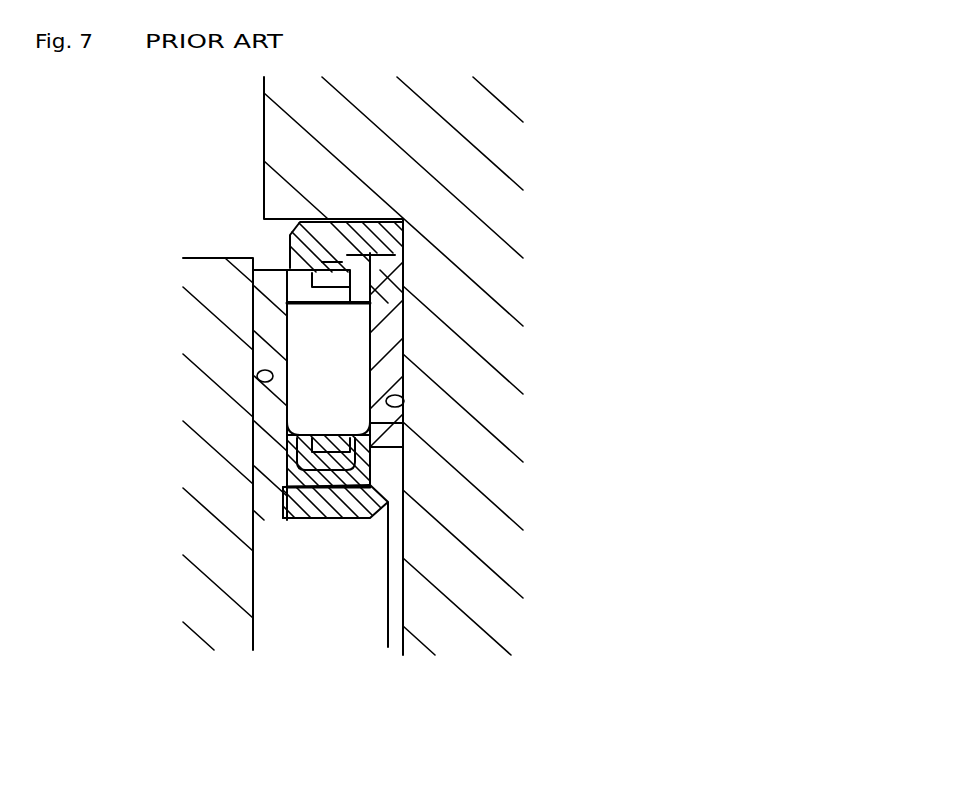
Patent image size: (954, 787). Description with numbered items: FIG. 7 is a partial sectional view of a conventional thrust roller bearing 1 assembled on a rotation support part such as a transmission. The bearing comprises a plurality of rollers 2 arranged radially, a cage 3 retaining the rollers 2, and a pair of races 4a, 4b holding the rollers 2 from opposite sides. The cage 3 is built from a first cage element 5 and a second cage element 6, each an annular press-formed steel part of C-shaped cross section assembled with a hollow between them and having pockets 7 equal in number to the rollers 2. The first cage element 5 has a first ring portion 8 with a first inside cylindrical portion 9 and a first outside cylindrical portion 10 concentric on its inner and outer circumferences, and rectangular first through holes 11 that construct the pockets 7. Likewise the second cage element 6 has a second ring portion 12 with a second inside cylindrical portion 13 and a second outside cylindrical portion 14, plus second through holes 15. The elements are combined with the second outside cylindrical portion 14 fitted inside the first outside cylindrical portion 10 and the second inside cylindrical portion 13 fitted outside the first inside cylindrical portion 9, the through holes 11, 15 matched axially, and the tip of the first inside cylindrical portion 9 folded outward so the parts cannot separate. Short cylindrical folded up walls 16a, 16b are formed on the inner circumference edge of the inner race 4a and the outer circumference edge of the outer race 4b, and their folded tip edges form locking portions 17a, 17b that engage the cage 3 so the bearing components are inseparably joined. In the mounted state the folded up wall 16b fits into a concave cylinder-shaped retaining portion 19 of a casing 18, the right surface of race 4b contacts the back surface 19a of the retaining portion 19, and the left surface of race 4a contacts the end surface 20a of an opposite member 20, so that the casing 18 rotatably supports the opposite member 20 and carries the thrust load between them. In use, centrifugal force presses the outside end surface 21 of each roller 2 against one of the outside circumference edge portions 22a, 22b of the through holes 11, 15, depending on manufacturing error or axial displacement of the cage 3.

The thrust roller bearing 1 is at (333, 384).
The rollers 2 is at (287, 403).
The cage 3 is at (372, 254).
The race 4a is at (272, 437).
The race 4b is at (385, 377).
The first cage element 5 is at (372, 284).
The second cage element 6 is at (287, 302).
The pockets 7 is at (403, 423).
The first ring portion 8 is at (403, 445).
The first inside cylindrical portion 9 is at (317, 470).
The first outside cylindrical portion 10 is at (332, 262).
The first through holes 11 is at (370, 340).
The second ring portion 12 is at (292, 440).
The second inside cylindrical portion 13 is at (283, 465).
The second outside cylindrical portion 14 is at (313, 272).
The second through holes 15 is at (300, 424).
The folded up wall 16a is at (345, 507).
The folded up wall 16b is at (398, 222).
The locking portion 17a is at (372, 487).
The locking portion 17b is at (292, 253).
The casing 18 is at (482, 144).
The retaining portion 19 is at (353, 227).
The back surface 19a is at (410, 407).
The opposite member 20 is at (214, 355).
The end surface 20a is at (253, 387).
The outside end surface 21 is at (290, 310).
The outside circumference edge portion 22a is at (372, 318).
The outside circumference edge portion 22b is at (290, 333).